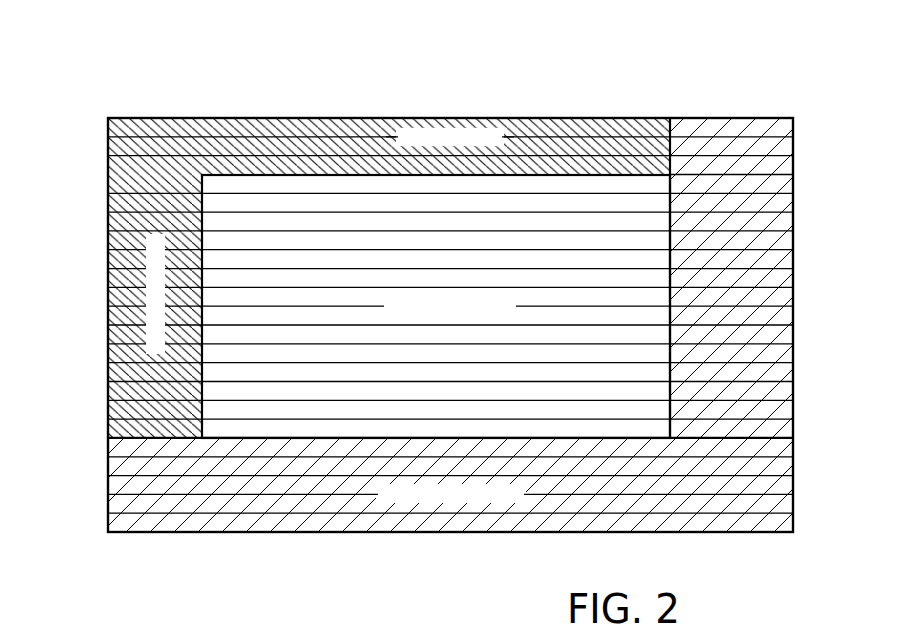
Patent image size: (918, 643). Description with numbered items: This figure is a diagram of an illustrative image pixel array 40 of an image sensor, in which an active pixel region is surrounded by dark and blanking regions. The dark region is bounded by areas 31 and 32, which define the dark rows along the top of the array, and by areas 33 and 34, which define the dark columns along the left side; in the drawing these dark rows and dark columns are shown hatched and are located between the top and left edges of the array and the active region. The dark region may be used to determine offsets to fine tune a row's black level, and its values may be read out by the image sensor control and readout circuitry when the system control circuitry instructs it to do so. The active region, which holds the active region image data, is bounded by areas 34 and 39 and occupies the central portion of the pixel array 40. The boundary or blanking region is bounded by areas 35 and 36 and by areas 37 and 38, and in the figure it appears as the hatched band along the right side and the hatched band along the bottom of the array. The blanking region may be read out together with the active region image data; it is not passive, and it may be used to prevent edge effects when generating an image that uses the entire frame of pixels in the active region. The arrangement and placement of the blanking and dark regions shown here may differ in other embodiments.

The image pixel array 40 is at (125, 35).
The blanking region boundary area 35 is at (793, 70).
The dark region boundary area 31 is at (670, 104).
The blanking region boundary area 37 is at (793, 104).
The dark region boundary area 32 is at (96, 118).
The dark region and active region boundary area 34 is at (96, 175).
The blanking region boundary area 36 is at (96, 438).
The dark region boundary area 33 is at (108, 542).
The active region boundary area 39 is at (202, 543).
The blanking region boundary area 38 is at (804, 532).